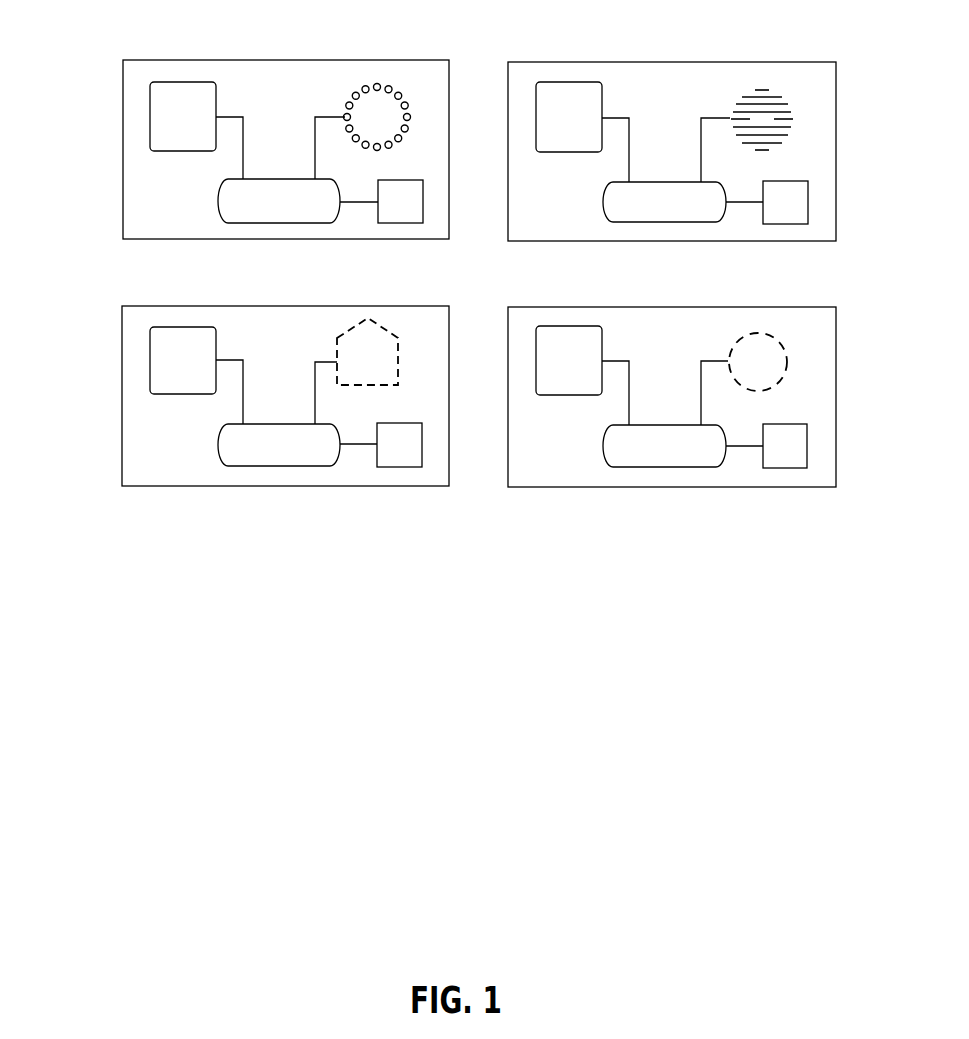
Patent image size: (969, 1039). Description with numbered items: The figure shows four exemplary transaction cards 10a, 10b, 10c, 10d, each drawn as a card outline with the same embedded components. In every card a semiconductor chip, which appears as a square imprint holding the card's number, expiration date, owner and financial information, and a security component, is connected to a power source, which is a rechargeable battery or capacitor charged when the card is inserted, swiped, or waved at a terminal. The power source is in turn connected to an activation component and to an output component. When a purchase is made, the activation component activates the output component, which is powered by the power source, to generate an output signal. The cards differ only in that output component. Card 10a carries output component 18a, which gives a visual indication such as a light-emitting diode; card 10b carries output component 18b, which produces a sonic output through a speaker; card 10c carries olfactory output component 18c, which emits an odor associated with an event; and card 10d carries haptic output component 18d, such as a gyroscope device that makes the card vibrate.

The transaction card 10a is at (245, 149).
The transaction card 10b is at (720, 151).
The transaction card 10c is at (244, 396).
The transaction card 10d is at (705, 397).
The output component 18a is at (363, 132).
The output component 18b is at (747, 136).
The olfactory output component 18c is at (356, 371).
The haptic output component 18d is at (744, 379).